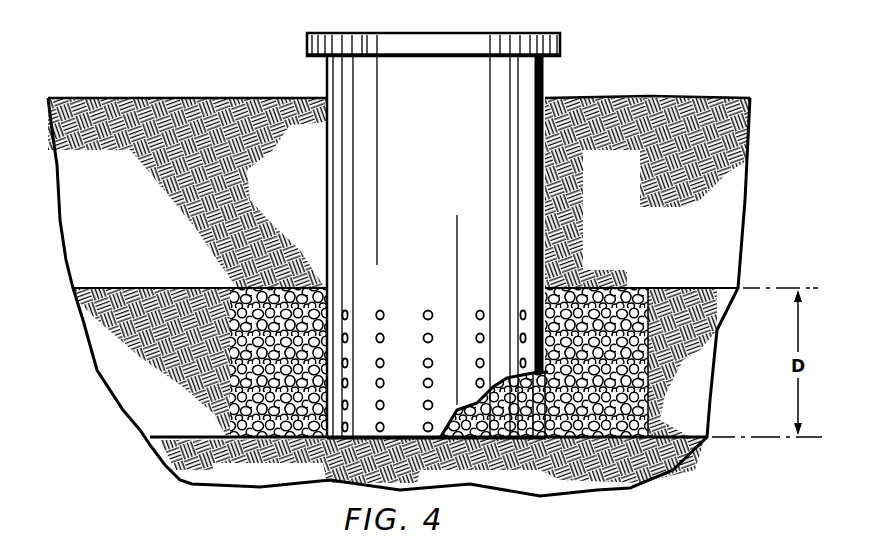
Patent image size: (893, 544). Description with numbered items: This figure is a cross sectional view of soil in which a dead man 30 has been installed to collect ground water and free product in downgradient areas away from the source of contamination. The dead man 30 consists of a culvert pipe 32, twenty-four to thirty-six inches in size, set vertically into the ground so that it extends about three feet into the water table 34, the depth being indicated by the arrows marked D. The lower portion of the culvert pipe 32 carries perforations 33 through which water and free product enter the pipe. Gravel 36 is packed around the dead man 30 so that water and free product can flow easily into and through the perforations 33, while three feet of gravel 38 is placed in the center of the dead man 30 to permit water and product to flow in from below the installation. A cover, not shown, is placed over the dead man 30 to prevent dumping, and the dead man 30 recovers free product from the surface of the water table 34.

The dead man 30 is at (592, 82).
The culvert pipe 32 is at (326, 73).
The perforations 33 is at (385, 310).
The water table 34 is at (178, 287).
The gravel 36 is at (265, 438).
The gravel 38 is at (498, 439).